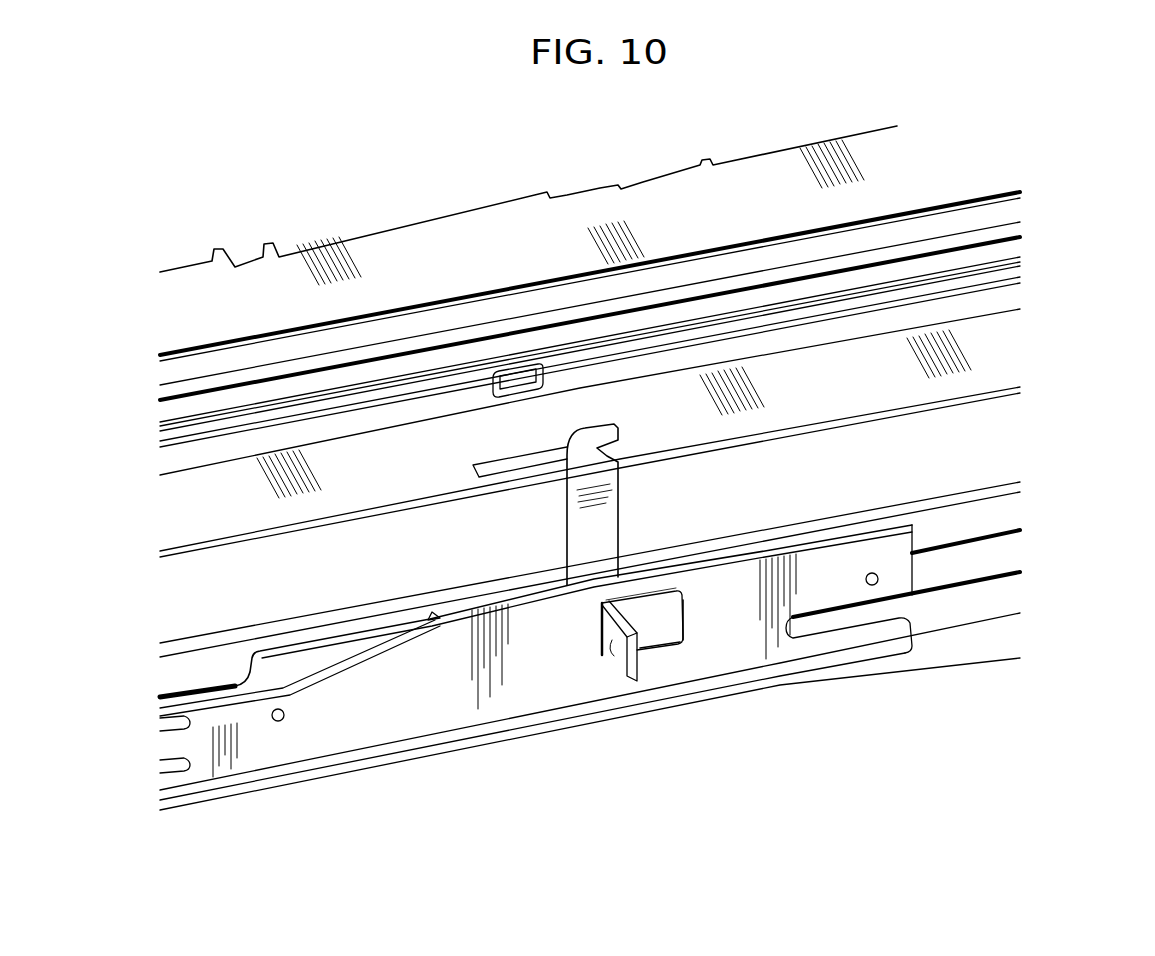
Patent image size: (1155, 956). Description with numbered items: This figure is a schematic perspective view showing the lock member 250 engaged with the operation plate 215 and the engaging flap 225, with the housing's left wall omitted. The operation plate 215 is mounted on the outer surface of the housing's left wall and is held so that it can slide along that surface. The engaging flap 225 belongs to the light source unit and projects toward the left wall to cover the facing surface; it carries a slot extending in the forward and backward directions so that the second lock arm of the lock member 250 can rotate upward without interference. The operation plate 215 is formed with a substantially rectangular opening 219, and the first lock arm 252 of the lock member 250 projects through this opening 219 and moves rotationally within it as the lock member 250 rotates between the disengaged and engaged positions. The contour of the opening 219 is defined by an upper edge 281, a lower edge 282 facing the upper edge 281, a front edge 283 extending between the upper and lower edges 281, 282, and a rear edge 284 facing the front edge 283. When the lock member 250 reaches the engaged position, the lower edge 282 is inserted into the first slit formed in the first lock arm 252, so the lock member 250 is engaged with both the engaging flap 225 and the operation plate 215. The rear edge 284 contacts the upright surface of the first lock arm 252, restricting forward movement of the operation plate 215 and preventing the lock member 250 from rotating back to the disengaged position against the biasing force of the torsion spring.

The operation plate 215 is at (422, 705).
The opening 219 is at (672, 628).
The engaging flap 225 is at (975, 345).
The lock member 250 is at (610, 527).
The first lock arm 252 is at (611, 652).
The upper edge 281 is at (650, 598).
The lower edge 282 is at (653, 650).
The front edge 283 is at (683, 613).
The rear edge 284 is at (597, 630).